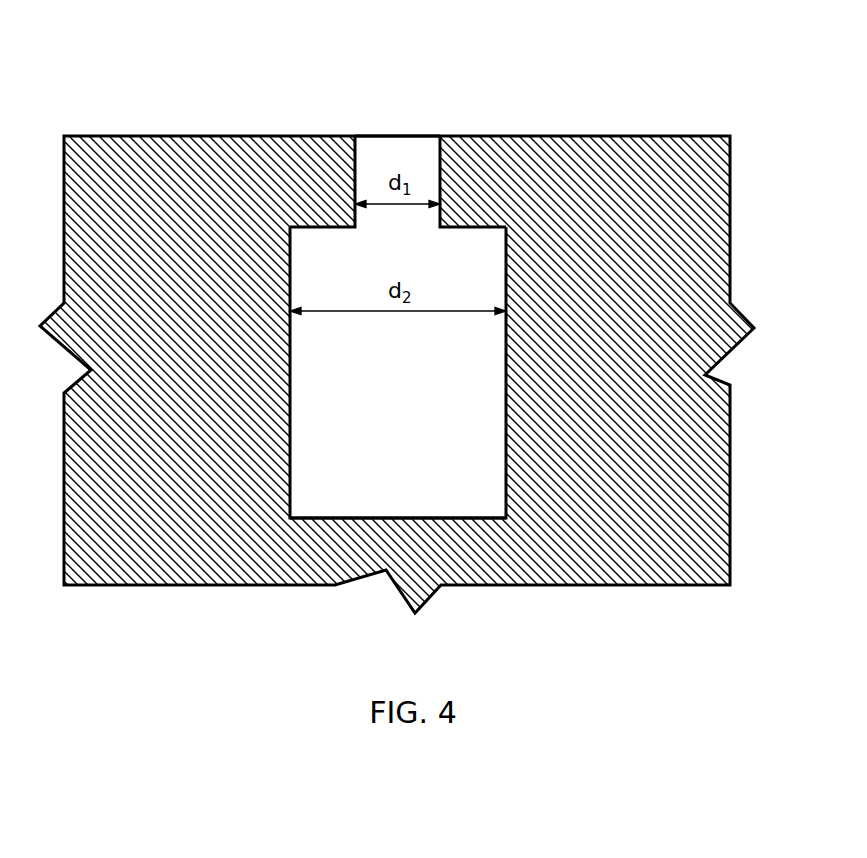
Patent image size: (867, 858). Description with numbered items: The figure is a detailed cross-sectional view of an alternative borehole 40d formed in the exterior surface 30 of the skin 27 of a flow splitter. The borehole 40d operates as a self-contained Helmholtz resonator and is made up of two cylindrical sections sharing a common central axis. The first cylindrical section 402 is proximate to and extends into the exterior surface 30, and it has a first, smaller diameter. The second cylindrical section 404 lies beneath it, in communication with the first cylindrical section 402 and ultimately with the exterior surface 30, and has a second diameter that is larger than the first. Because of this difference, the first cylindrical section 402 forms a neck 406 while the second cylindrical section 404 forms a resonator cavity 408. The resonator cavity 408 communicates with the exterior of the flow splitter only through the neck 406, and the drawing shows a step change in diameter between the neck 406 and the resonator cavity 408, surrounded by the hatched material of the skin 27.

The skin 27 is at (695, 277).
The exterior surface 30 is at (192, 128).
The borehole 40d is at (393, 153).
The first cylindrical section 402 is at (347, 158).
The second cylindrical section 404 is at (283, 422).
The neck 406 is at (415, 153).
The resonator cavity 408 is at (457, 483).